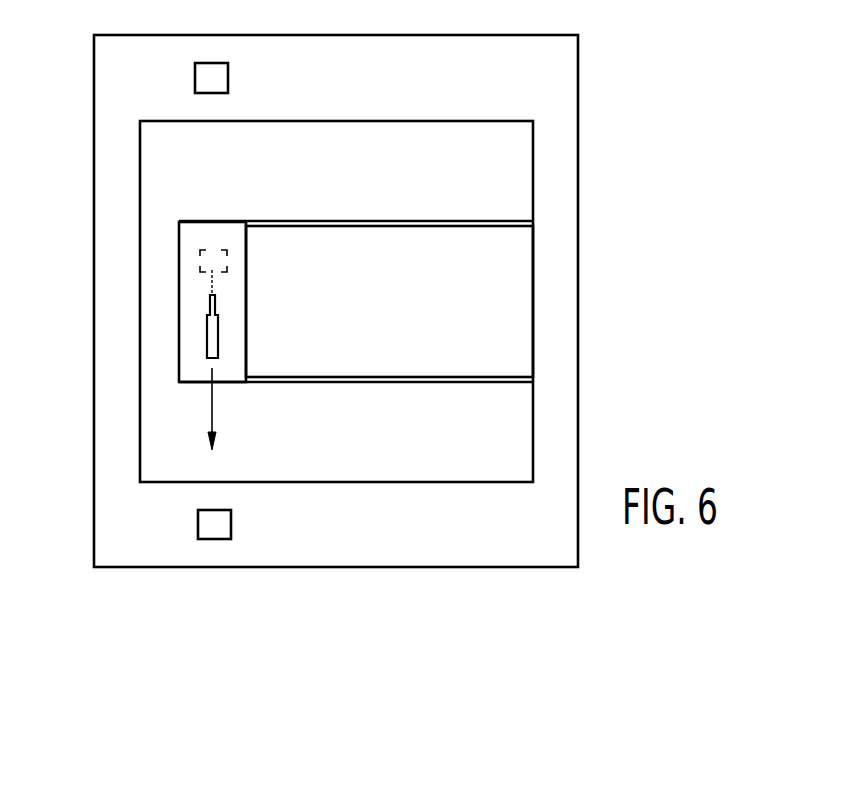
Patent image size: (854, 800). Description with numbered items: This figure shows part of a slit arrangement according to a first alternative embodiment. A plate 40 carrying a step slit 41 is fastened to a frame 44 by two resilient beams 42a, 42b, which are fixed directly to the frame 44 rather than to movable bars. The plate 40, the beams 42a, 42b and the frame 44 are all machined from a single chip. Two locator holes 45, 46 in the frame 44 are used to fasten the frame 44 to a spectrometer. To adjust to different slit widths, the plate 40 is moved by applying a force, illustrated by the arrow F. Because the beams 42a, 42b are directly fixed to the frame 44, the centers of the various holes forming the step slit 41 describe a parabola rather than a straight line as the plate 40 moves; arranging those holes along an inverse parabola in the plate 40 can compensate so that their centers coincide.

The plate 40 is at (235, 323).
The step slit 41 is at (207, 338).
The resilient beam 42a is at (388, 219).
The resilient beam 42b is at (395, 384).
The frame 44 is at (562, 163).
The locator hole 45 is at (212, 68).
The locator hole 46 is at (202, 522).